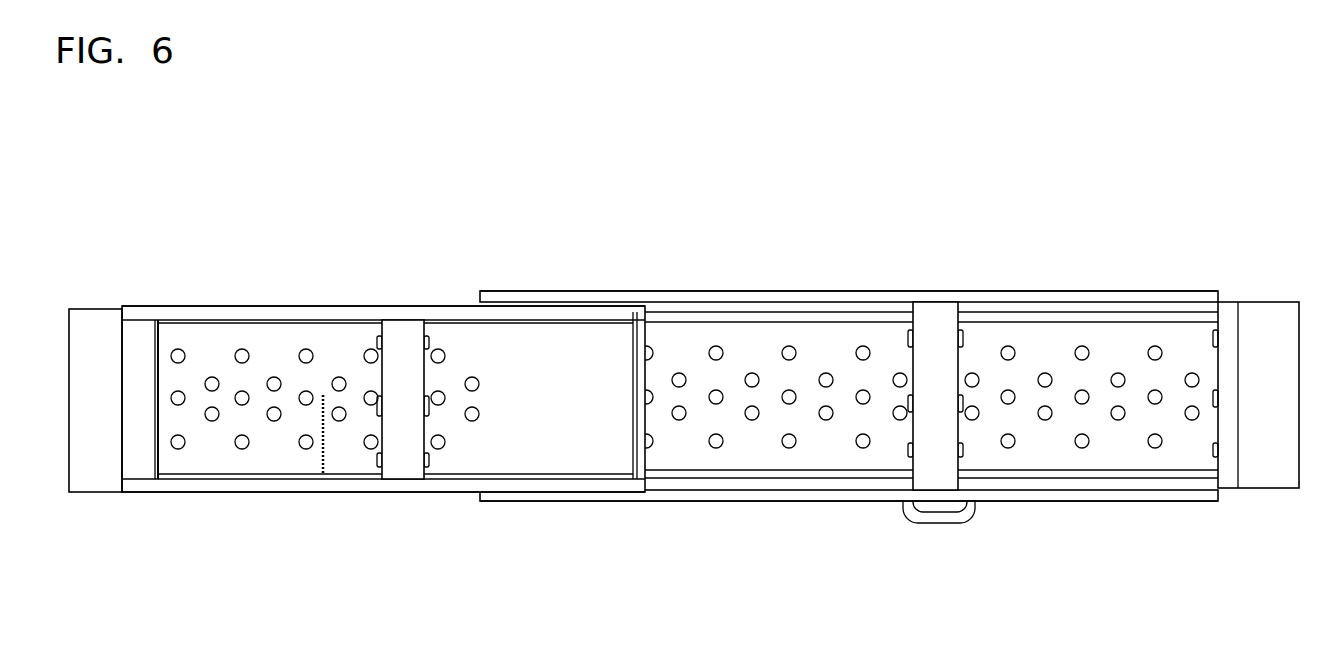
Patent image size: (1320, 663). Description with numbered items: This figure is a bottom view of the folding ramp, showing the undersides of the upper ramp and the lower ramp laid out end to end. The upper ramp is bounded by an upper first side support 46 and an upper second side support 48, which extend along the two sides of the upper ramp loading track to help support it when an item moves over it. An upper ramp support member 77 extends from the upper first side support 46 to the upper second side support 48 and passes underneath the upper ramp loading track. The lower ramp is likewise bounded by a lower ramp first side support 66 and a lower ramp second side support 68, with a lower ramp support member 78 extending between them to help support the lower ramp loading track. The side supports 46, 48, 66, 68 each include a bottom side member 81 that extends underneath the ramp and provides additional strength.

The upper first side support 46 is at (285, 483).
The upper second side support 48 is at (222, 306).
The lower ramp first side support 66 is at (780, 495).
The lower ramp second side support 68 is at (755, 299).
The upper ramp support member 77 is at (400, 345).
The lower ramp support member 78 is at (930, 308).
The bottom side member 81 is at (451, 306).